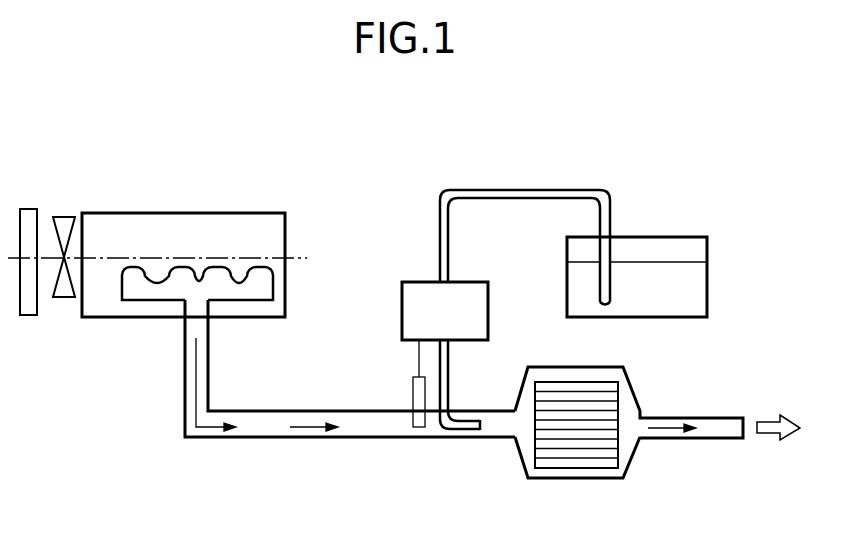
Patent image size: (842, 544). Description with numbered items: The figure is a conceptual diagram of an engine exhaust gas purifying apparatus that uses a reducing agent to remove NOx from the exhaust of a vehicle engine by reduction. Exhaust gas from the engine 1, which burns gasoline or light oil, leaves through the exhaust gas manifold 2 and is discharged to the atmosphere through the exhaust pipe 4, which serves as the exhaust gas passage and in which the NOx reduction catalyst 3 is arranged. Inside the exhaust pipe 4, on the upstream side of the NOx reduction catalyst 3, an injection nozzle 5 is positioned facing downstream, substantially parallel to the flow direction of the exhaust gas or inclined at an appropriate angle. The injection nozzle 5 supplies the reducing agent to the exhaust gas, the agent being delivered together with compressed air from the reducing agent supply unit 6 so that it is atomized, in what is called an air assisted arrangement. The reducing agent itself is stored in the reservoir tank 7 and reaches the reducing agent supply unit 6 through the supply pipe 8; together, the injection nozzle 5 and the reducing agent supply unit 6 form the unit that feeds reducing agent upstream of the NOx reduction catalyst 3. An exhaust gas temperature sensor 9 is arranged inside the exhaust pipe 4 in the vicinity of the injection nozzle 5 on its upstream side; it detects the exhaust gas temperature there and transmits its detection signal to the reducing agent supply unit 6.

The engine 1 is at (143, 213).
The exhaust gas manifold 2 is at (273, 285).
The NOx reduction catalyst 3 is at (590, 478).
The exhaust pipe 4 is at (305, 437).
The injection nozzle 5 is at (455, 437).
The reducing agent supply unit 6 is at (402, 313).
The reservoir tank 7 is at (707, 298).
The supply pipe 8 is at (440, 237).
The exhaust gas temperature sensor 9 is at (415, 437).